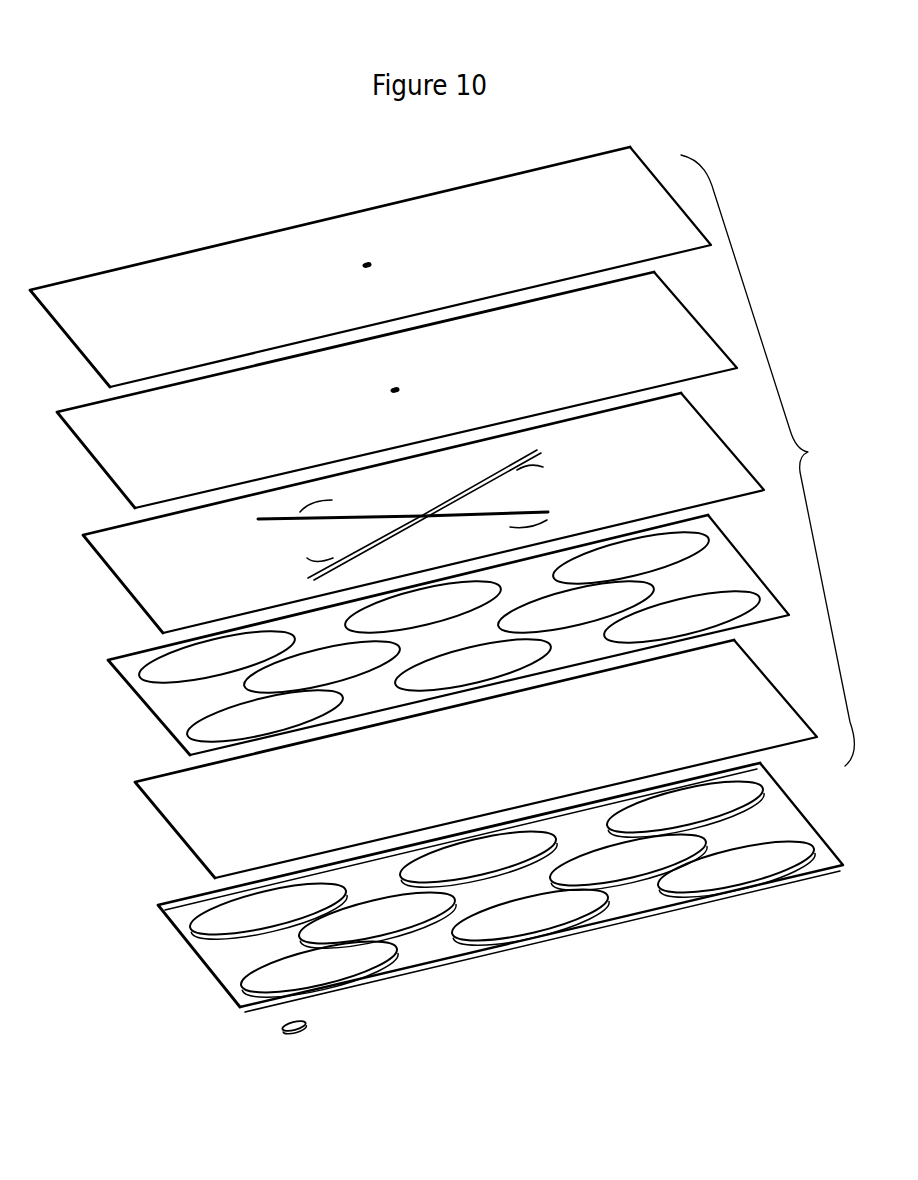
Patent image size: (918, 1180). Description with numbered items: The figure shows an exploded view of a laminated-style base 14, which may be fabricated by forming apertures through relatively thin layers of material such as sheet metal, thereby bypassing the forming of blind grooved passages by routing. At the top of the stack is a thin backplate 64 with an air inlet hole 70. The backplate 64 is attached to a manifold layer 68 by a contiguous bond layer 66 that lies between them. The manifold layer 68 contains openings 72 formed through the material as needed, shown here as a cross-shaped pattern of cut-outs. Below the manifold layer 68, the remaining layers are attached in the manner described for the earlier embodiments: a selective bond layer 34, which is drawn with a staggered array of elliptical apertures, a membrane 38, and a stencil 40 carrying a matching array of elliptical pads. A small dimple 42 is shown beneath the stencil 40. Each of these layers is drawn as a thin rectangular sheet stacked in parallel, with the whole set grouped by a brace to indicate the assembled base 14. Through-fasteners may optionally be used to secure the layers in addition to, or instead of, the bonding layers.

The label assembly 14 is at (767, 460).
The backplate 64 is at (167, 288).
The air inlet hole 70 is at (365, 264).
The contiguous bond layer 66 is at (143, 438).
The manifold layer 68 is at (147, 572).
The openings 72 is at (545, 462).
The selective bond layer 34 is at (132, 662).
The membrane 38 is at (170, 795).
The stencil 40 is at (180, 920).
The dimple 42 is at (308, 1029).